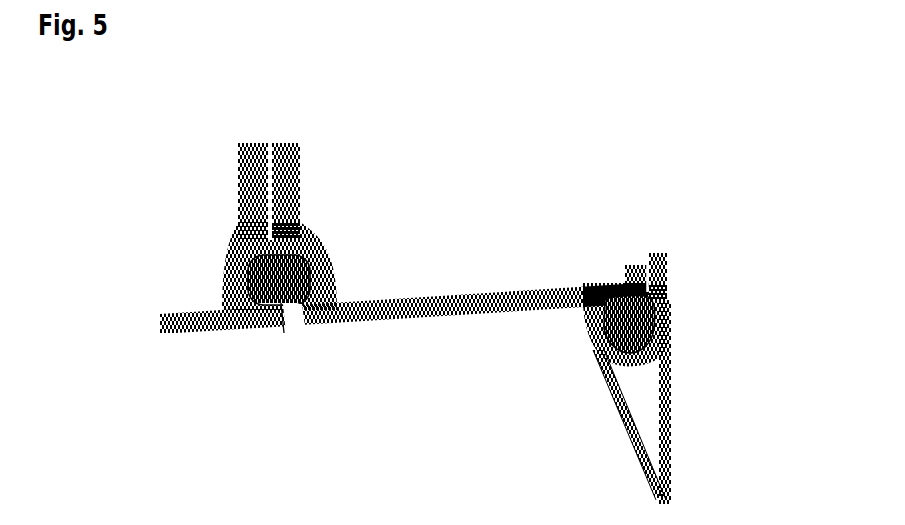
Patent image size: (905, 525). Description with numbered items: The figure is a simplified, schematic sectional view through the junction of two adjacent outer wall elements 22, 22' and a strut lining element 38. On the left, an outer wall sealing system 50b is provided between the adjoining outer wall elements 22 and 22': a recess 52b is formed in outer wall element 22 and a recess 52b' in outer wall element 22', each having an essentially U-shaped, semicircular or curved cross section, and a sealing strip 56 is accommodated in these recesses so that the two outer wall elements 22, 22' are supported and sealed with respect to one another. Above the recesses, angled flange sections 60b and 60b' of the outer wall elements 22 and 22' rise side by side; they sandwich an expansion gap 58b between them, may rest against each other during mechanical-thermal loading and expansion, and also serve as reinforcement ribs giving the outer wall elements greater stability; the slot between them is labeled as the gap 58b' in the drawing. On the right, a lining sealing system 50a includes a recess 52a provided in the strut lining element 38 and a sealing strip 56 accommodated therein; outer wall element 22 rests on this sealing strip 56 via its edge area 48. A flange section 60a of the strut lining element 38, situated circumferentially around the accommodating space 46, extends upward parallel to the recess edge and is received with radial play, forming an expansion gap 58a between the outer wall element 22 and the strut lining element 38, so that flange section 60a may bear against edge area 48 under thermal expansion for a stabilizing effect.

The outer wall element 22 is at (466, 250).
The outer wall element 22' is at (187, 275).
The strut lining element 38 is at (670, 493).
The accommodating space 46 is at (670, 368).
The edge area 48 is at (632, 265).
The lining sealing system 50a is at (586, 358).
The outer wall sealing system 50b is at (286, 338).
The recess 52a is at (595, 330).
The recess 52b is at (305, 238).
The recess 52b' is at (252, 242).
The sealing strip 56 is at (302, 283).
The expansion gap 58a is at (648, 284).
The expansion gap 58b is at (239, 373).
The second gap (further) 58b' is at (265, 152).
The flange section 60a is at (660, 257).
The flange section 60b is at (311, 150).
The flange section 60b' is at (217, 150).